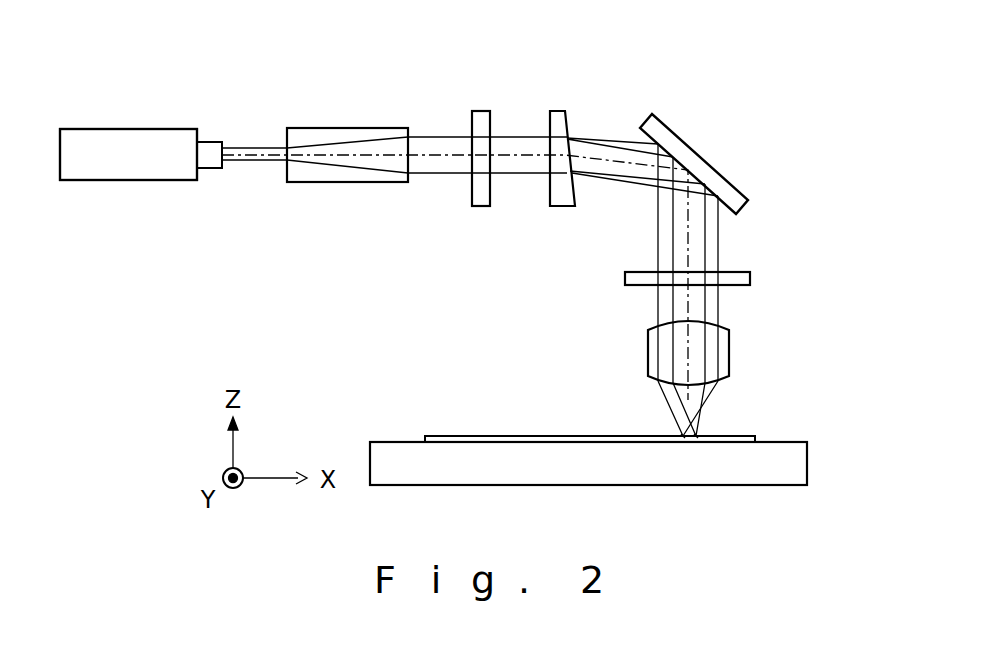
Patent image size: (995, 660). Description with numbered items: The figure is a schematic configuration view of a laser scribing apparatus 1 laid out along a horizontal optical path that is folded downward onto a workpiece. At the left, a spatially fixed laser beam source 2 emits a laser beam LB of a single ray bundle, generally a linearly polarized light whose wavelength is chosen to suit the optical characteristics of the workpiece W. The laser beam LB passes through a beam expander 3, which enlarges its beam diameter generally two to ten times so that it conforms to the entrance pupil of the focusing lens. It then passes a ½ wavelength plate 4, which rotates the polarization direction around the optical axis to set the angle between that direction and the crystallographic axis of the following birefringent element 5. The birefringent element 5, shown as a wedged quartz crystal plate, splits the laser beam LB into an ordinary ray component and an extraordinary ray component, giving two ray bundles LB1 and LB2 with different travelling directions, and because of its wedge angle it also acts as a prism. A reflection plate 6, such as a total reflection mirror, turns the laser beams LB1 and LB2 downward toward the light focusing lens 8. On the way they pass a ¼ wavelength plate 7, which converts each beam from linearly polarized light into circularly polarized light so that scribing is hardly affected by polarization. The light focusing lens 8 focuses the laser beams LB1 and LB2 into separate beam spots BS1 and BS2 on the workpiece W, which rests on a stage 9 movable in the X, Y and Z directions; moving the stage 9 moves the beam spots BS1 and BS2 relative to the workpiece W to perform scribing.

The scribing apparatus 1 is at (243, 118).
The laser beam source 2 is at (136, 170).
The beam expander 3 is at (325, 175).
The ½ wavelength plate 4 is at (483, 200).
The birefringent element 5 is at (565, 198).
The reflection plate 6 is at (686, 151).
The ¼ wavelength plate 7 is at (750, 278).
The light focusing lens 8 is at (730, 352).
The stage 9 is at (398, 445).
The workpiece W is at (516, 440).
The laser beam LB is at (253, 162).
The laser beam LB1 is at (658, 258).
The laser beam LB2 is at (673, 228).
The beam spot BS1 is at (684, 442).
The beam spot BS2 is at (696, 440).